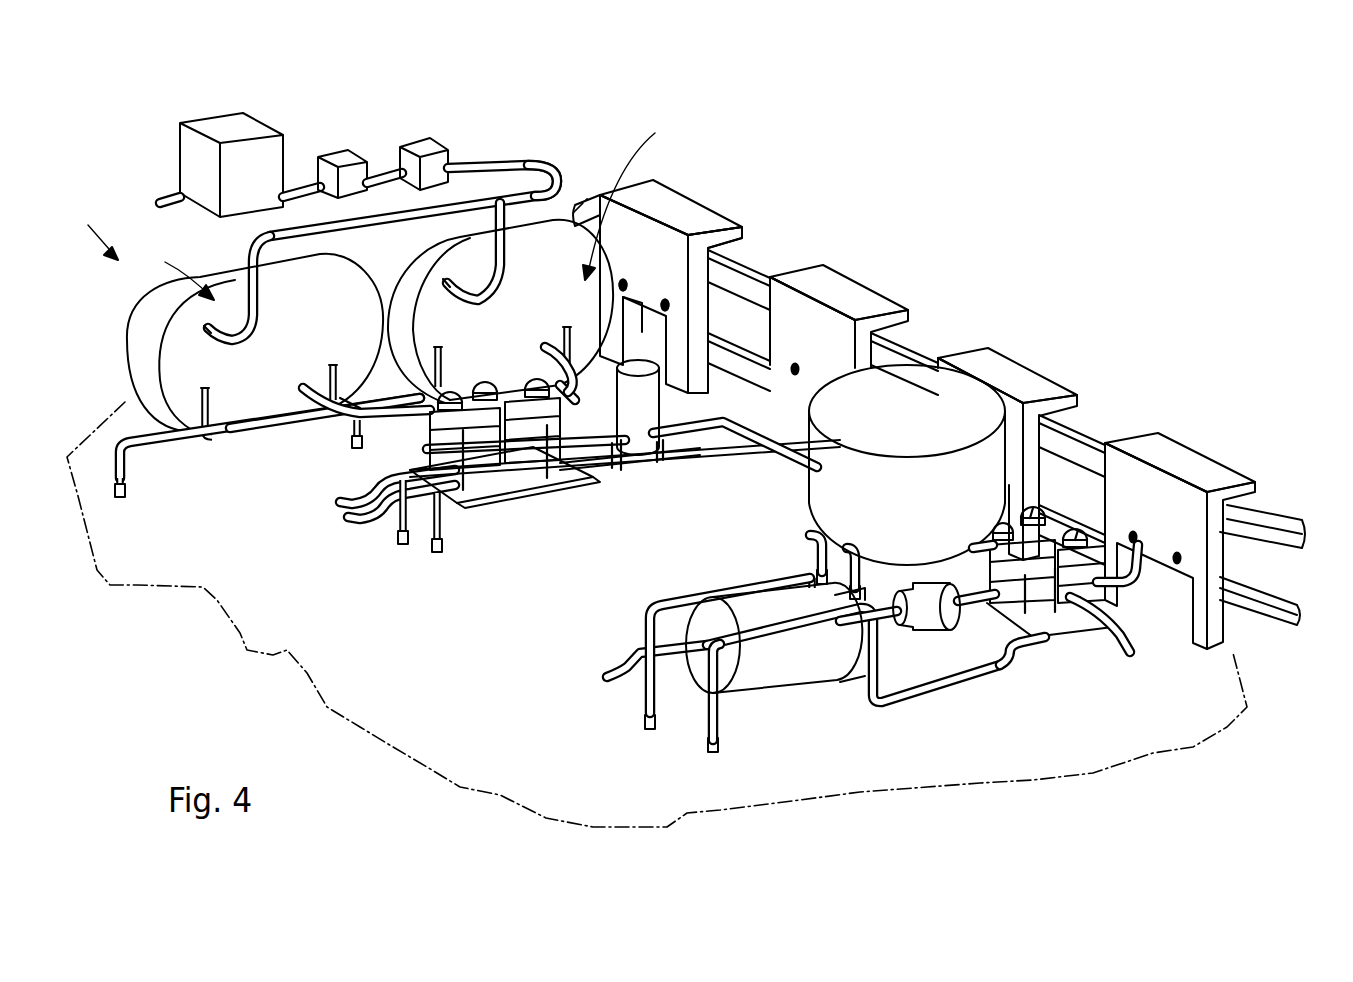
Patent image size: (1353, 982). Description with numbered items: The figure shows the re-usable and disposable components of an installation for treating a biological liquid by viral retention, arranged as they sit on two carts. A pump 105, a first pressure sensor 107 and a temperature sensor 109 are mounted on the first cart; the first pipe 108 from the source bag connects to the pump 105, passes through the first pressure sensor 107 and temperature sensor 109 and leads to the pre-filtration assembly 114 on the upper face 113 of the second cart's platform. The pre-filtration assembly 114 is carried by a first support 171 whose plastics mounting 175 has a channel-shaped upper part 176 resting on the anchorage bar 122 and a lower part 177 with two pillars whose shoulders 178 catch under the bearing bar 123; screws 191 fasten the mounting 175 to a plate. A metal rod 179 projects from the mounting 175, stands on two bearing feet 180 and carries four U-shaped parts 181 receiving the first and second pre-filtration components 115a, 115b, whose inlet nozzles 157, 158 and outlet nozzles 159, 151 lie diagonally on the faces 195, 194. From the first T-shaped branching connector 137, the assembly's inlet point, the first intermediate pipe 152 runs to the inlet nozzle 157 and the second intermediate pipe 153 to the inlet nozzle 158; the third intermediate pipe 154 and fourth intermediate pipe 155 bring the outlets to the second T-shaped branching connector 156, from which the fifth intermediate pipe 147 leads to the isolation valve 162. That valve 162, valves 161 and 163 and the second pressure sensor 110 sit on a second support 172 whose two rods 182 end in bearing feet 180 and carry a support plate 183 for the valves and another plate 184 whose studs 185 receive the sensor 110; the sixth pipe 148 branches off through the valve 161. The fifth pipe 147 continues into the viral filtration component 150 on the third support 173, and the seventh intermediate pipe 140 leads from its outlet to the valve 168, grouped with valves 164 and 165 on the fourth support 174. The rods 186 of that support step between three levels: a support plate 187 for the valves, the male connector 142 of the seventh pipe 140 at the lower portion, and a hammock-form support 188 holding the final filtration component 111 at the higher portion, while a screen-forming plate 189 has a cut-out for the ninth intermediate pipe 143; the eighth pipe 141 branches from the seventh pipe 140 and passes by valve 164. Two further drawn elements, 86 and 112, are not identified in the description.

The pipe 86 is at (480, 162).
The pump 105 is at (212, 124).
The first pressure sensor 107 is at (333, 152).
The first pipe 108 is at (160, 200).
The temperature sensor 109 is at (414, 142).
The second pressure sensor 110 is at (648, 455).
The final filtration component 111 is at (728, 598).
The pipe 112 is at (632, 655).
The upper face 113 is at (449, 680).
The pre-filtration assembly 114 is at (86, 227).
The first pre-filtration component 115a is at (388, 262).
The second pre-filtration component 115b is at (150, 300).
The anchorage bar 122 is at (583, 195).
The bearing bar 123 is at (1270, 600).
The first T-shaped branching connector 137 is at (520, 165).
The seventh intermediate pipe 140 is at (985, 545).
The eighth pipe 141 is at (1128, 655).
The male connector 142 is at (950, 632).
The ninth intermediate pipe 143 is at (880, 700).
The fifth intermediate pipe 147 is at (380, 470).
The sixth pipe 148 is at (356, 518).
The viral filtration component 150 is at (890, 418).
The outlet nozzle 151 is at (302, 386).
The first intermediate pipe 152 is at (503, 275).
The second intermediate pipe 153 is at (250, 262).
The third intermediate pipe 154 is at (575, 390).
The fourth intermediate pipe 155 is at (270, 428).
The second T-shaped branching connector 156 is at (352, 398).
The inlet nozzle 157 is at (445, 284).
The inlet nozzle 158 is at (206, 333).
The outlet nozzle 159 is at (548, 348).
The valve 161 is at (360, 498).
The isolation valve 162 is at (485, 390).
The valve 163 is at (560, 480).
The valve 164 is at (1080, 533).
The valve 165 is at (1000, 522).
The valve 168 is at (1035, 510).
The first support 171 is at (677, 153).
The second support 172 is at (854, 237).
The third support 173 is at (1033, 335).
The fourth support 174 is at (1216, 433).
The mounting 175 is at (705, 212).
The channel-shaped upper part 176 is at (740, 232).
The lower part 177 is at (730, 270).
The shoulder 178 is at (740, 350).
The metal rod 179 is at (160, 448).
The bearing feet 180 is at (122, 495).
The U-shaped metal parts 181 is at (210, 405).
The metal rods 182 is at (663, 440).
The support plate 183 is at (490, 505).
The plate 184 is at (680, 455).
The studs 185 is at (622, 472).
The metal rods 186 is at (1148, 610).
The support plate 187 is at (1045, 630).
The support 188 is at (760, 688).
The screen-forming plate 189 is at (860, 675).
The screws 191 is at (623, 280).
The face 194 is at (170, 268).
The face 195 is at (635, 191).